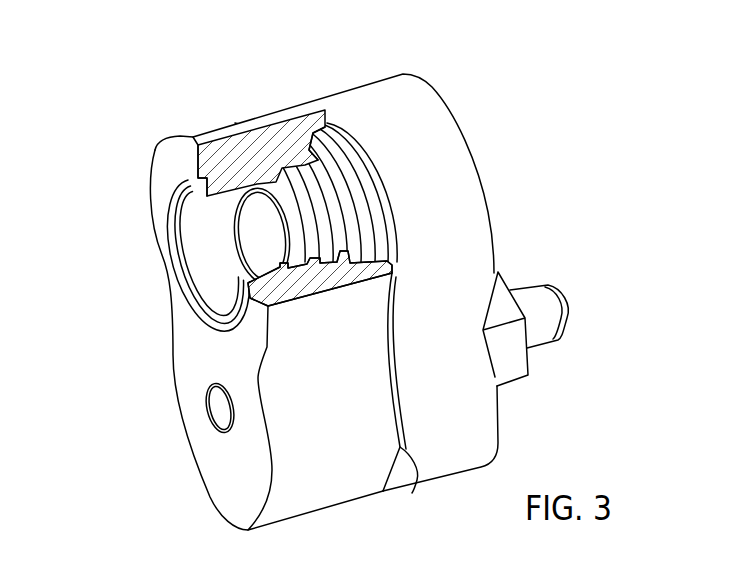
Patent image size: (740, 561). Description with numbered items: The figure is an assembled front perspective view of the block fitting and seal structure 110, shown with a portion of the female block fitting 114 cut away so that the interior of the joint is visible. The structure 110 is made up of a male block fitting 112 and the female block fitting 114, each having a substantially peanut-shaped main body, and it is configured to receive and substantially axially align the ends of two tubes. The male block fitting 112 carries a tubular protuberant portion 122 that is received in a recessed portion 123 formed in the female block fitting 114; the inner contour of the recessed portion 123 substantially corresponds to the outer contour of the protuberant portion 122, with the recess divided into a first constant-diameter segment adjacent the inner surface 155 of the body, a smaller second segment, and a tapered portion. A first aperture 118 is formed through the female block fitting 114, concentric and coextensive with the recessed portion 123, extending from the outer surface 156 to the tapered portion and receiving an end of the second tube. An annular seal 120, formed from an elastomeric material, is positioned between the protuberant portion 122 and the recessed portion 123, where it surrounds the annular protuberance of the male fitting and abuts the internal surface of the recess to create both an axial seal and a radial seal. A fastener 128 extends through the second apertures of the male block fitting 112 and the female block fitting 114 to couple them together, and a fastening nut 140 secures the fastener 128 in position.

The block fitting and seal structure 110 is at (151, 79).
The male block fitting 112 is at (458, 368).
The female block fitting 114 is at (243, 340).
The first aperture 118 is at (207, 248).
The annular seal 120 is at (359, 122).
The protuberant portion 122 is at (312, 196).
The recessed portion 123 is at (326, 122).
The fastener 128 is at (227, 408).
The fastening nut 140 is at (518, 388).
The inner surface 155 is at (414, 480).
The outer surface 156 is at (217, 487).